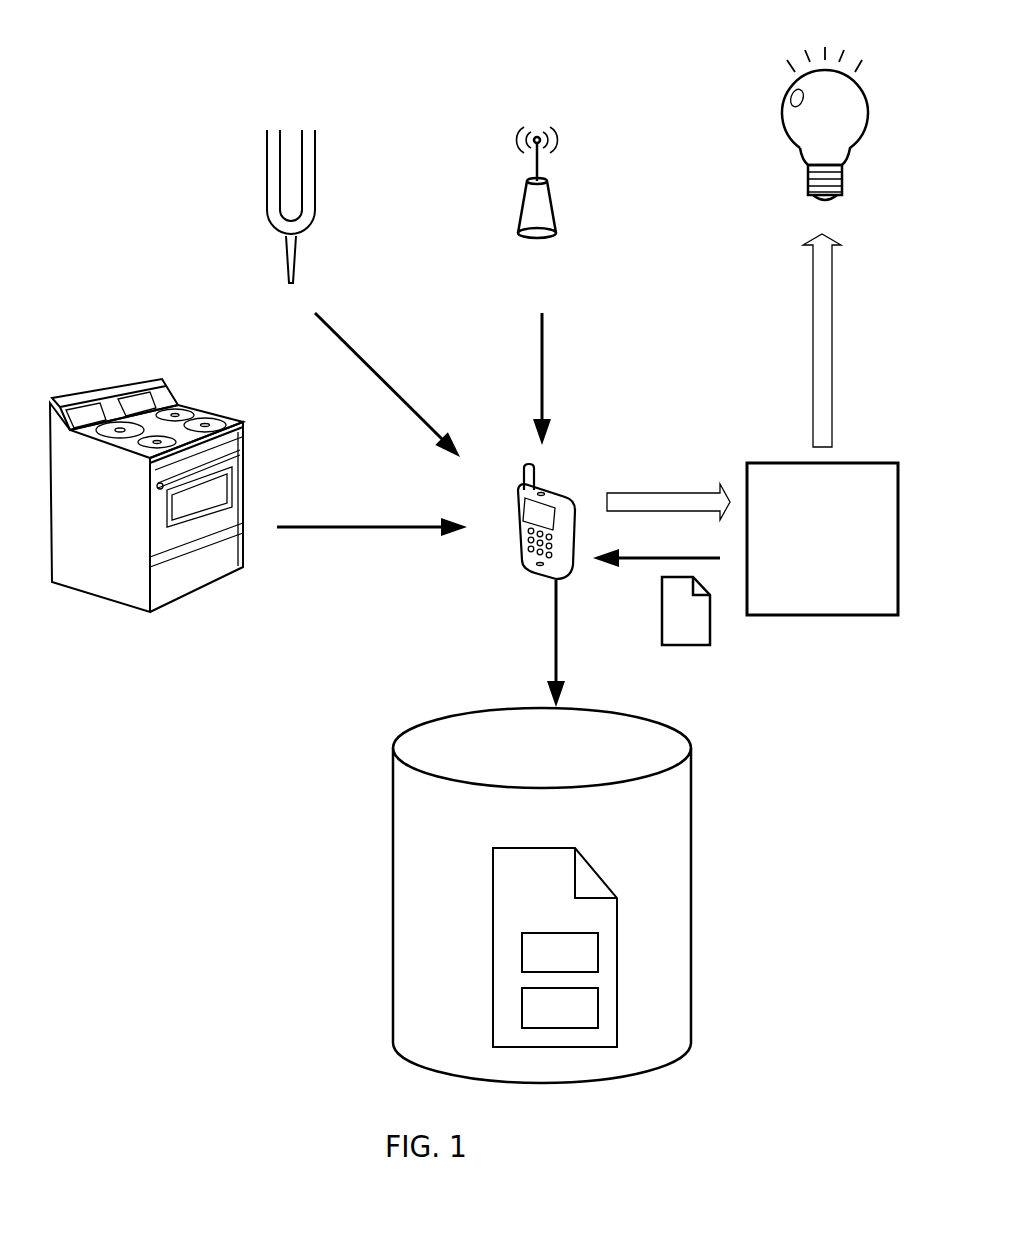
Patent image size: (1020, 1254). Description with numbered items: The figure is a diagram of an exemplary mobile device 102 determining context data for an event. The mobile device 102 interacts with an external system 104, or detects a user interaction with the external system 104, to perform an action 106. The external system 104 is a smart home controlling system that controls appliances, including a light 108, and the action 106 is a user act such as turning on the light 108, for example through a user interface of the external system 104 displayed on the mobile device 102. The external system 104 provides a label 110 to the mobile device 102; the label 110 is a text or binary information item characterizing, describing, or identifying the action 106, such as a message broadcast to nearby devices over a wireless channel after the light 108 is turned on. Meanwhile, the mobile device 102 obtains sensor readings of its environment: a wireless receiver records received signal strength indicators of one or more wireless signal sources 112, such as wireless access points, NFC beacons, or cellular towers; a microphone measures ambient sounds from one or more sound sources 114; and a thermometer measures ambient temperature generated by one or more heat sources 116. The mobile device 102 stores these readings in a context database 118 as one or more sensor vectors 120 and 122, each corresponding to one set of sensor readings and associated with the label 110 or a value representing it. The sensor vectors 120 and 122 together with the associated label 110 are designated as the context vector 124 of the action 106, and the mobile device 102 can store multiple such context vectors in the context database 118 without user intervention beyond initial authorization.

The mobile device 102 is at (538, 570).
The external system 104 is at (760, 465).
The action 106 is at (665, 493).
The light 108 is at (781, 122).
The label 110 is at (710, 640).
The wireless signal sources 112 is at (527, 183).
The sound sources 114 is at (270, 225).
The heat sources 116 is at (158, 613).
The context database 118 is at (393, 860).
The sensor vector 120 is at (598, 942).
The sensor vector 122 is at (598, 1003).
The context vector 124 is at (493, 972).